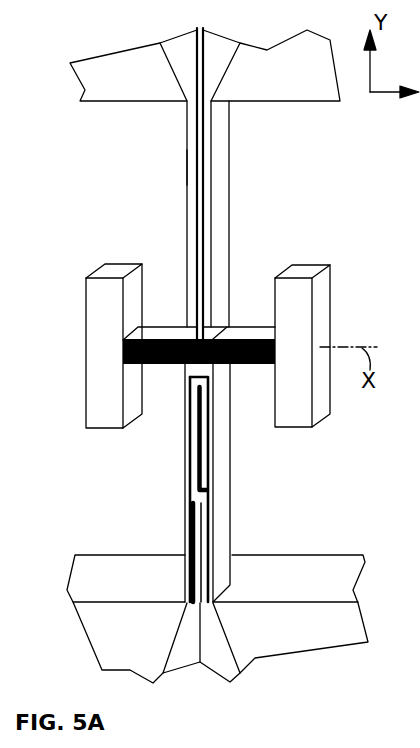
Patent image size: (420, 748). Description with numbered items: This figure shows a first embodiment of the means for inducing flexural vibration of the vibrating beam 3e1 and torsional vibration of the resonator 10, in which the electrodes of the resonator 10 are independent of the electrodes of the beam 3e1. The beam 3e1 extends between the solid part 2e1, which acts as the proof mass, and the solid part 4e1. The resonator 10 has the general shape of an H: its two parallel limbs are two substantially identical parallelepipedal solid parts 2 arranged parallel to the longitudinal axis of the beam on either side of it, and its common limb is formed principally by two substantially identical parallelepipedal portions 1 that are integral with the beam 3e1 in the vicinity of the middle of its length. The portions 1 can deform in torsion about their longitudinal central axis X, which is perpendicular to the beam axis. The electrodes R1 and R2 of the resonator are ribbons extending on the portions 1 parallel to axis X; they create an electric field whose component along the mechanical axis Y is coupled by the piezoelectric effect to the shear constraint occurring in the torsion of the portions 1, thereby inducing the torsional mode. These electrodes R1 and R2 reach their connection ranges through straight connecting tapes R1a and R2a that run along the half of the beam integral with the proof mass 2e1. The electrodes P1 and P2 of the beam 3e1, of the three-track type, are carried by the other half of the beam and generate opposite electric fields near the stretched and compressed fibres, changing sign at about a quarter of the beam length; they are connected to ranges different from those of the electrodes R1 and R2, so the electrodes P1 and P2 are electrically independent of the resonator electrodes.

The solid part 2e1 is at (115, 93).
The vibrating beam 3e1 is at (220, 163).
The solid part 4e1 is at (120, 575).
The portion 1 is at (168, 333).
The solid part 2 is at (95, 295).
The resonator 10 is at (268, 240).
The electrode R1 is at (153, 337).
The electrode R2 is at (165, 367).
The connecting tape R1a is at (187, 235).
The connecting tape R2a is at (185, 167).
The electrode P1 is at (185, 532).
The electrode P2 is at (210, 466).